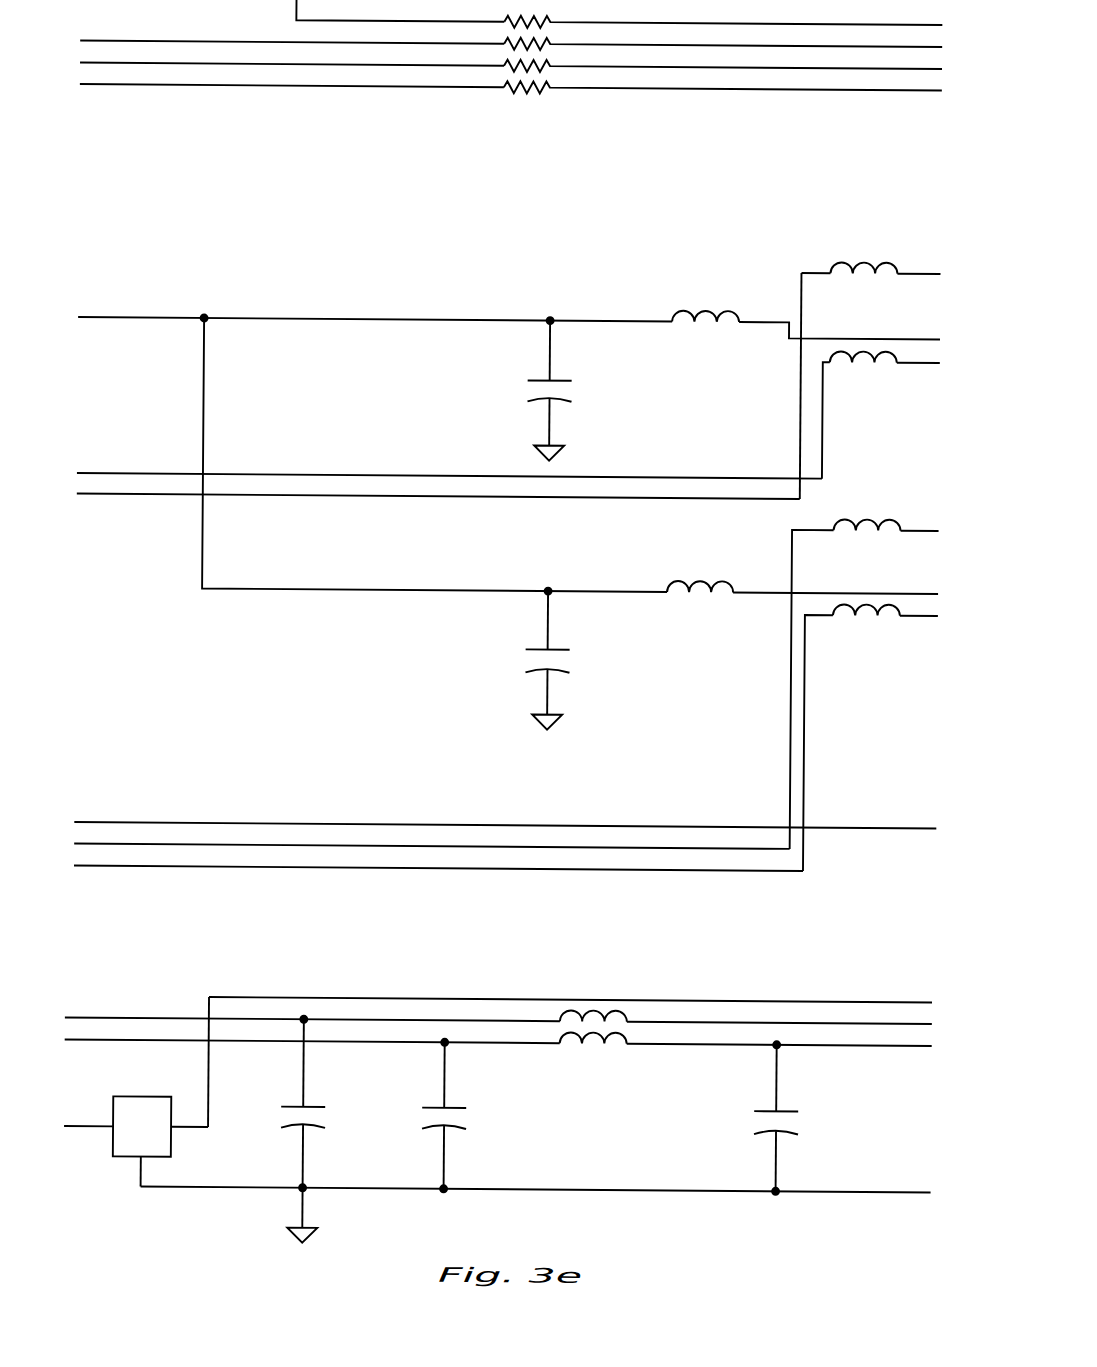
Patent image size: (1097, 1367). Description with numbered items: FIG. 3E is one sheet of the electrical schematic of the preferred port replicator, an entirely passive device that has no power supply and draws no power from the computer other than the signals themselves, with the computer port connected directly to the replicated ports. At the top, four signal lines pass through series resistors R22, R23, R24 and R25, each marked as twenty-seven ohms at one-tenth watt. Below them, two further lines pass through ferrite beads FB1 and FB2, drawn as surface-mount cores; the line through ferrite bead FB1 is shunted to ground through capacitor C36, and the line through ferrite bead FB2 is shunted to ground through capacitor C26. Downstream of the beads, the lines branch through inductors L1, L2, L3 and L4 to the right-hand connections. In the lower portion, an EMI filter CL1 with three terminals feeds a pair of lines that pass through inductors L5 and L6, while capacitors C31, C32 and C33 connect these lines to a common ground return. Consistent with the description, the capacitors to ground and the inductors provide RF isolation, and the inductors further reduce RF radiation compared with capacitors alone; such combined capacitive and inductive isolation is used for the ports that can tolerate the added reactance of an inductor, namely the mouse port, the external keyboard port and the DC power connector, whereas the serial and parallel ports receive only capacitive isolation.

The resistor R22, 27 ohm 1/10W R22 is at (619, 15).
The resistor R23, 27 ohm 1/10W R23 is at (511, 36).
The resistor R24, 27 ohm 1/10W R24 is at (511, 58).
The resistor R25, 27 ohm 1/10W R25 is at (511, 80).
The ferrite bead FB1, SMT core FB1 is at (796, 321).
The ferrite bead FB2, SMT core FB2 is at (793, 590).
The inductor L1, BLM21AO5 L1 is at (870, 368).
The inductor L2, BLM21AO5 L2 is at (881, 396).
The inductor L3, BLM21AO5 L3 is at (864, 669).
The inductor L4, BLM21AO5 L4 is at (870, 722).
The inductor L5, HF70 L5 is at (718, 1014).
The inductor L6, HF70 L6 is at (718, 1036).
The capacitor C36, 0.10F C36 is at (517, 390).
The capacitor C26, 0.10F C26 is at (514, 659).
The capacitor C31, 0.33UF C31 is at (339, 1131).
The capacitor C32, 0.33UF C32 is at (481, 1115).
The capacitor C33, 0.1UF C33 is at (808, 1118).
The EMI filter CL1 is at (136, 1114).